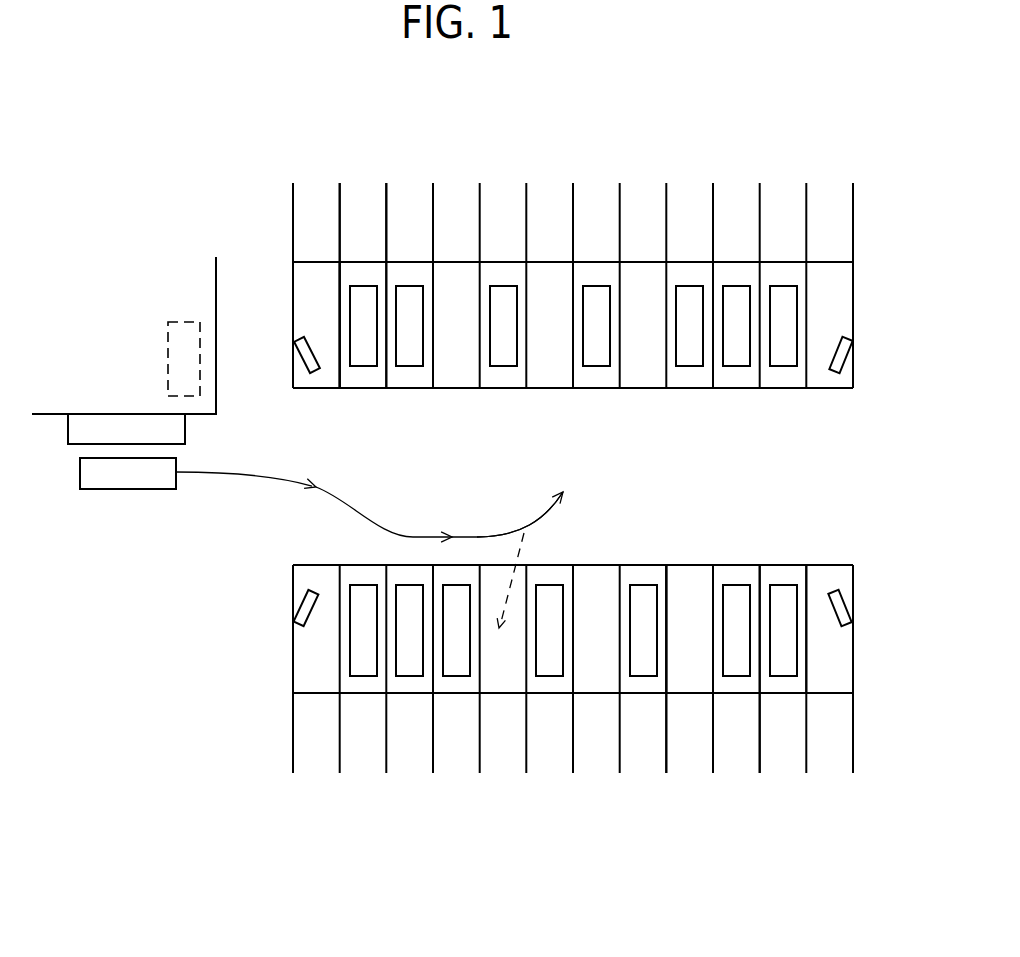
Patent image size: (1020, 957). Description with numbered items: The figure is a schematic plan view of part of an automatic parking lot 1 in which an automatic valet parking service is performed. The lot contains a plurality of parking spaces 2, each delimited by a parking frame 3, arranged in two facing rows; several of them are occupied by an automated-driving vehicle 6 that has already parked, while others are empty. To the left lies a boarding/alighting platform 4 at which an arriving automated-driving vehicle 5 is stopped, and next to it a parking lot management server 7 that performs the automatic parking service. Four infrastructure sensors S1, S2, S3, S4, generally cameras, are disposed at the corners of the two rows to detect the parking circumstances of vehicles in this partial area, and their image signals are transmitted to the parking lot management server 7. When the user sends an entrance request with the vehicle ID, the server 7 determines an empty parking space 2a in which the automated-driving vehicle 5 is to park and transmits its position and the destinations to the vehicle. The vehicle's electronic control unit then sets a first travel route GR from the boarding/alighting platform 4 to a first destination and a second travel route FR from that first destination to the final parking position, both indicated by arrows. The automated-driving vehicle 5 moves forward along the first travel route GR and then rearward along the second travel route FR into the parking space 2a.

The parking lot 1 is at (737, 162).
The parking spaces 2 is at (362, 379).
The parking space 2a is at (513, 595).
The parking frame 3 is at (340, 277).
The boarding/alighting platform 4 is at (116, 430).
The automated-driving vehicle 5 is at (125, 478).
The automated-driving vehicle 6 is at (502, 352).
The parking lot management server 7 is at (185, 320).
The infrastructure sensor S1 is at (297, 354).
The infrastructure sensor S2 is at (296, 607).
The infrastructure sensor S3 is at (852, 346).
The infrastructure sensor S4 is at (850, 600).
The first travel route GR is at (255, 478).
The second travel route FR is at (548, 512).